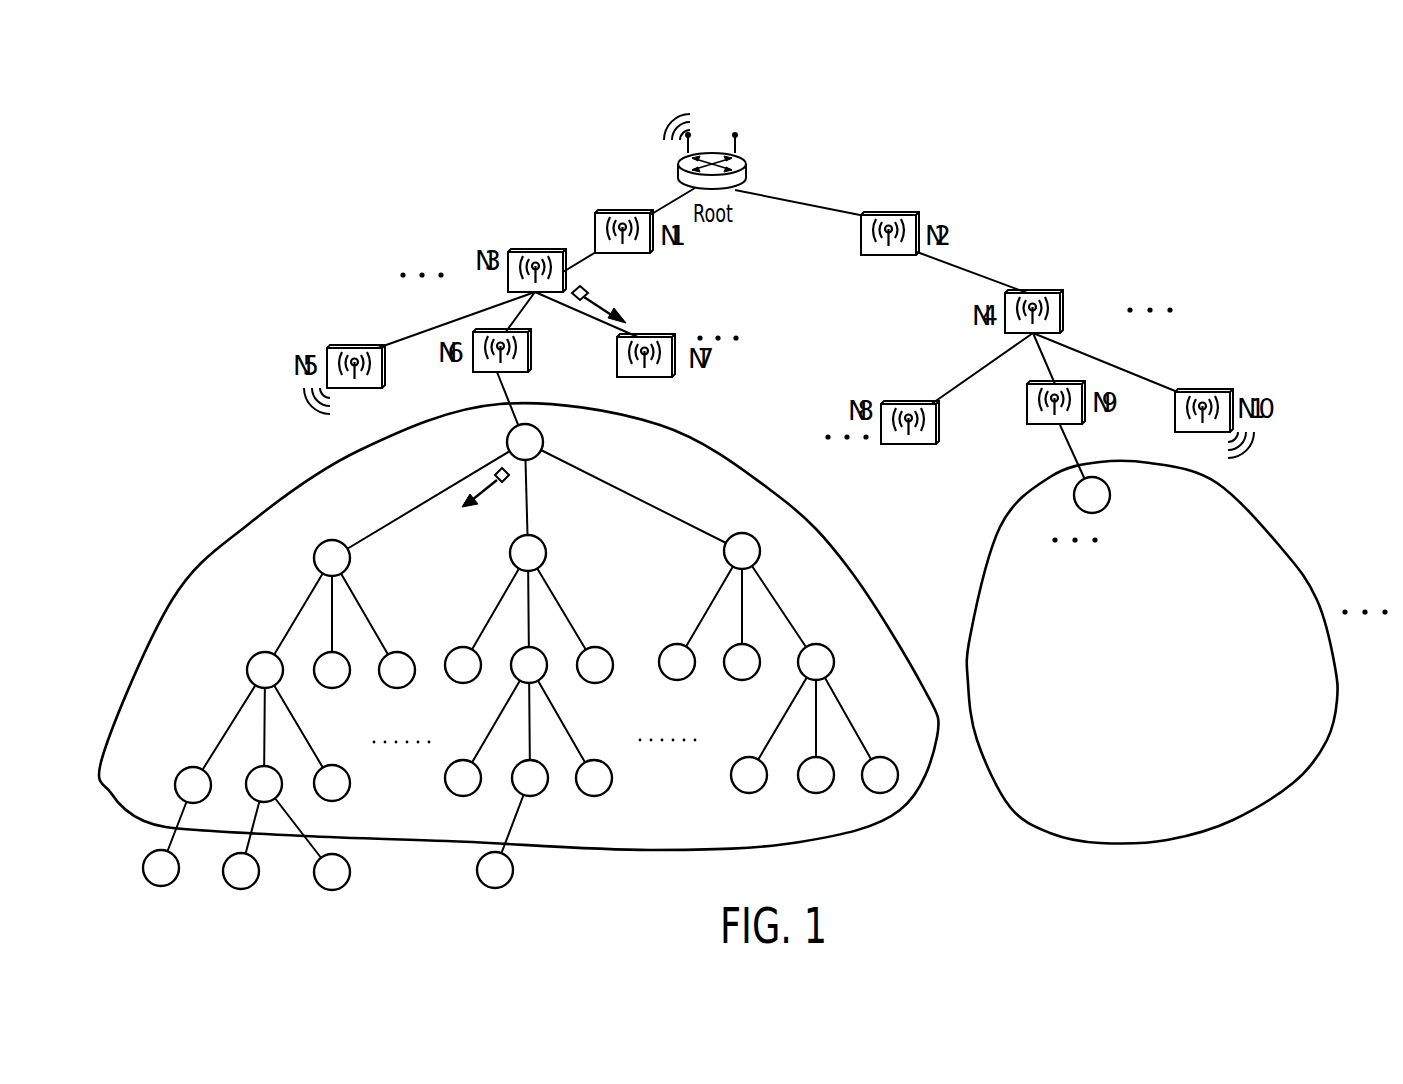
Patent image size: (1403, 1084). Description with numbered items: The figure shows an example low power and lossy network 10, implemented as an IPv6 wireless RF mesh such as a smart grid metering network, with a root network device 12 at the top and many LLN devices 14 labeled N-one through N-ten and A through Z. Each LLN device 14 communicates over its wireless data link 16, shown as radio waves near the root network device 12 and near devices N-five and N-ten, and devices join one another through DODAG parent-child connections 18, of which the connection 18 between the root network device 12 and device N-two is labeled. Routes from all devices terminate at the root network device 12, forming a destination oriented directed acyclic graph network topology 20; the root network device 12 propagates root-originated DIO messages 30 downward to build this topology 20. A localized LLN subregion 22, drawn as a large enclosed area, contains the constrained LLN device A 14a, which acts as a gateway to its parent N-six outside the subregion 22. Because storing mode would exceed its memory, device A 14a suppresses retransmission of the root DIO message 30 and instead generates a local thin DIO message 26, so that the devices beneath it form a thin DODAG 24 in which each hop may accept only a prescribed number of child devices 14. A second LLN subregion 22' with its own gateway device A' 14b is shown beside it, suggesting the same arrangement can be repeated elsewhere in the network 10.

The low power and lossy network 10 is at (1208, 140).
The root network device 12 is at (748, 168).
The LLN devices 14 is at (618, 214).
The constrained LLN device A 14a is at (535, 460).
The LLN device A' 14b is at (1108, 505).
The wireless data link 16 is at (662, 118).
The DODAG parent-child connection 18 is at (805, 205).
The DODAG network topology 20 is at (838, 183).
The LLN subregion 22 is at (519, 626).
The LLN subregion 22' is at (1185, 652).
The thin DODAG 24 is at (672, 490).
The thin DIO message 26 is at (505, 484).
The root-originated DIO message 30 is at (590, 291).